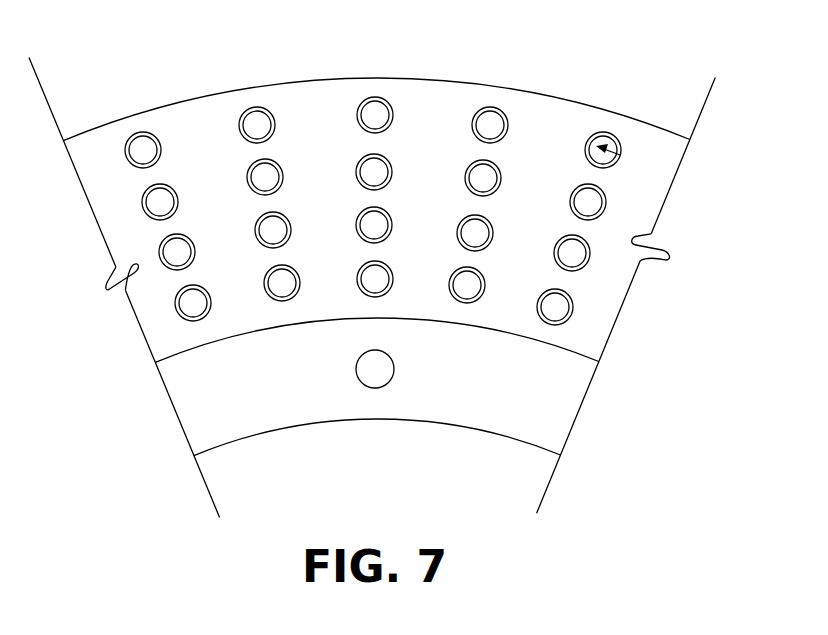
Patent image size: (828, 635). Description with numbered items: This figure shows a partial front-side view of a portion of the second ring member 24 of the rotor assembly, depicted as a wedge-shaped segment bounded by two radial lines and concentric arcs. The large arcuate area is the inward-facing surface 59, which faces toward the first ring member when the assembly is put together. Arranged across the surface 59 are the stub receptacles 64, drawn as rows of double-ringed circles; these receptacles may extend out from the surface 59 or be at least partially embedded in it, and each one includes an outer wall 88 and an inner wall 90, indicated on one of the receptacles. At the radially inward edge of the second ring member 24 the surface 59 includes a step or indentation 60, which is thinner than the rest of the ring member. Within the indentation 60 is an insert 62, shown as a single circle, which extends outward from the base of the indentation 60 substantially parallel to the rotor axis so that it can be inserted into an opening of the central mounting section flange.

The second ring member 24 is at (190, 92).
The surface 59 is at (311, 107).
The indentation 60 is at (455, 387).
The insert 62 is at (356, 369).
The stub receptacle 64 is at (356, 225).
The outer wall 88 is at (598, 122).
The inner wall 90 is at (620, 155).